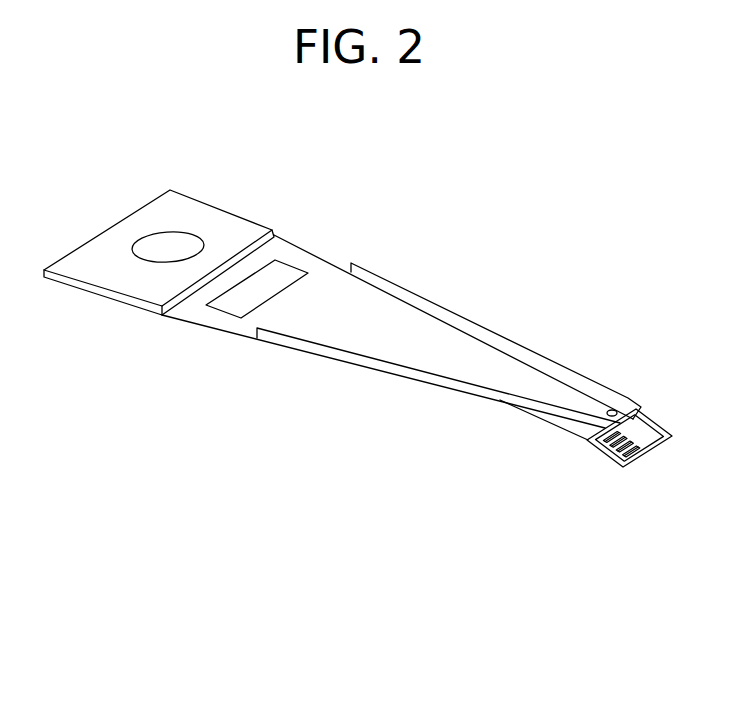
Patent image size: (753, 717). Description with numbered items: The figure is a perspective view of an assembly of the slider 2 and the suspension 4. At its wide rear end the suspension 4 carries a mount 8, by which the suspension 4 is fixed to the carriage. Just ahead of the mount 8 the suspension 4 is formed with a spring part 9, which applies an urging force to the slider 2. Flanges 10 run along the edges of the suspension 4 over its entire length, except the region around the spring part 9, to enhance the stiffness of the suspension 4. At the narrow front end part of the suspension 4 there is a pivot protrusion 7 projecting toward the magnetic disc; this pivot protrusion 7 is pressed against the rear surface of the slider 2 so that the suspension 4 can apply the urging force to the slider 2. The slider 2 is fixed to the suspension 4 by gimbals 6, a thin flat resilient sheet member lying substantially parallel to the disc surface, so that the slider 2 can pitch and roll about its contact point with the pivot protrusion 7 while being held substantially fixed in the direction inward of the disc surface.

The slider 2 is at (612, 458).
The suspension 4 is at (391, 305).
The gimbals 6 is at (553, 424).
The pivot protrusion 7 is at (620, 430).
The mount 8 is at (213, 226).
The spring part 9 is at (213, 320).
The flanges 10 is at (497, 338).